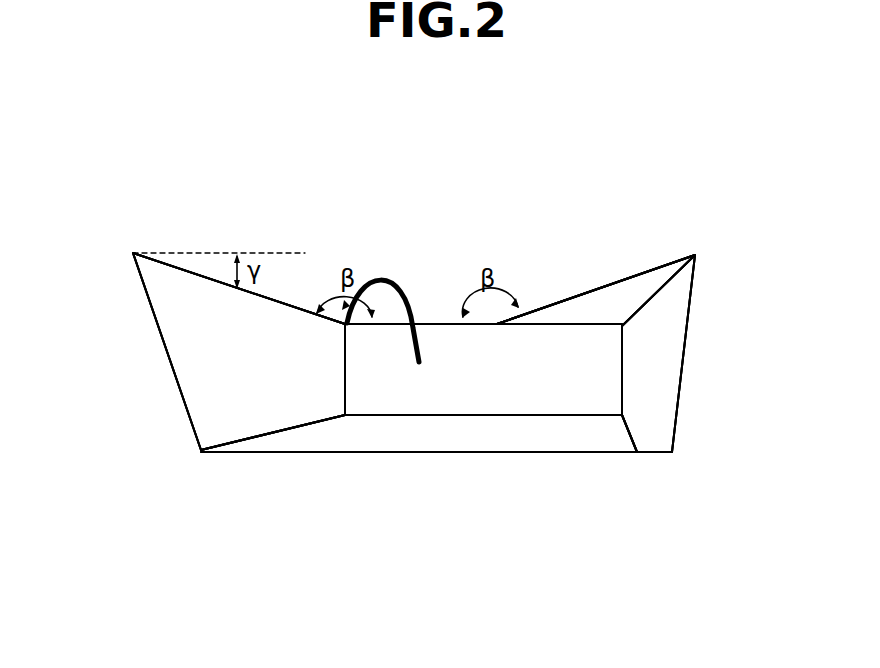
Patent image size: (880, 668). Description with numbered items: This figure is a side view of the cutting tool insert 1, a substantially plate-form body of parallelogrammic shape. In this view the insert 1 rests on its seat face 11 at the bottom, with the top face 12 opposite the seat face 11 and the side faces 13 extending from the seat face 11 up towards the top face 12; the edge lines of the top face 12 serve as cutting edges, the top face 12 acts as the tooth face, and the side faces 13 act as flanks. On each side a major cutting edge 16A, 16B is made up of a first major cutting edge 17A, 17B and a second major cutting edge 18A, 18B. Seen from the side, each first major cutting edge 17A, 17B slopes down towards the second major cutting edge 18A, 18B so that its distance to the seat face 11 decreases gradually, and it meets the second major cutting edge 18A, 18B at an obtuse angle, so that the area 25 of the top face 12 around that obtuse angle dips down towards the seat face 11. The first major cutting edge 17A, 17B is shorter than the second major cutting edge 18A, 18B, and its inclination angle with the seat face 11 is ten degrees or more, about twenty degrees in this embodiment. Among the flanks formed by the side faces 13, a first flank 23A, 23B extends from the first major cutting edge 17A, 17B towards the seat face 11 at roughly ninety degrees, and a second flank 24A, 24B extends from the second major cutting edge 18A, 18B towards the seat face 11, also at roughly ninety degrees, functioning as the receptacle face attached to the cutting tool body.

The cutting tool insert 1 is at (669, 214).
The seat face 11 is at (450, 455).
The top face 12 is at (428, 312).
The side faces 13 is at (165, 354).
The major cutting edge 16A is at (363, 152).
The major cutting edge 16B is at (612, 154).
The first major cutting edge 17A is at (200, 274).
The first major cutting edge 17B is at (587, 287).
The second major cutting edge 18A is at (399, 323).
The second major cutting edge 18B is at (452, 323).
The first flank 23A is at (263, 377).
The first flank 23B is at (282, 486).
The second flank 24A is at (563, 383).
The second flank 24B is at (639, 487).
The area of the top face around the obtuse angle 25 is at (402, 345).